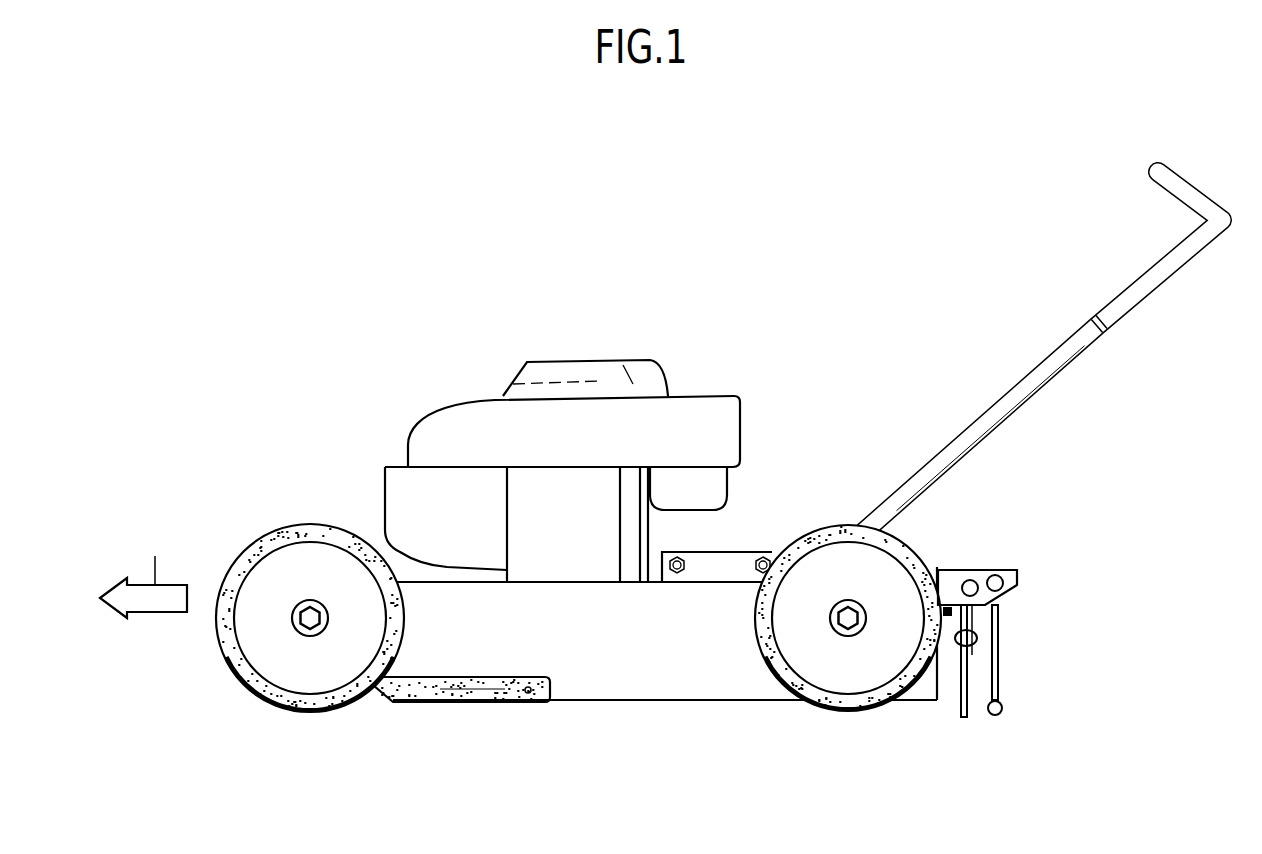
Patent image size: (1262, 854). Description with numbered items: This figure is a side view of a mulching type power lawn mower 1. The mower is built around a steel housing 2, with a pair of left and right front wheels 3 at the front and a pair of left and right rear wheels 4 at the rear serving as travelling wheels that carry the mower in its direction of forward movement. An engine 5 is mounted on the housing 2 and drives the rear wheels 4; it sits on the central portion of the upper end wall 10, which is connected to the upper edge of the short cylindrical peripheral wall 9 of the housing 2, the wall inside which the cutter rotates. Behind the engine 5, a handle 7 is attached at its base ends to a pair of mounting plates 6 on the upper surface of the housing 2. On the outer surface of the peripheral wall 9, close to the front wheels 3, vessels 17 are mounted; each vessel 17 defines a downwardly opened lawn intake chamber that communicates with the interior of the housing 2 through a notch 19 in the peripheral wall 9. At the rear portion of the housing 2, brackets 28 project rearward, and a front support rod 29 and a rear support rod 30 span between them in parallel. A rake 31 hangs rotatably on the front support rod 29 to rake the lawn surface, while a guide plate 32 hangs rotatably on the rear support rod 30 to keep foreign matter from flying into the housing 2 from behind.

The power lawn mower 1 is at (426, 368).
The housing 2 is at (665, 671).
The front wheels 3 is at (306, 527).
The rear wheels 4 is at (836, 530).
The engine 5 is at (710, 410).
The mounting plates 6 is at (725, 565).
The handle 7 is at (1037, 383).
The peripheral wall 9 is at (625, 688).
The upper end wall 10 is at (563, 580).
The vessels 17 is at (452, 688).
The notch 19 is at (475, 690).
The brackets 28 is at (985, 575).
The front support rod 29 is at (968, 580).
The rear support rod 30 is at (998, 577).
The rake 31 is at (963, 720).
The guide plate 32 is at (999, 650).